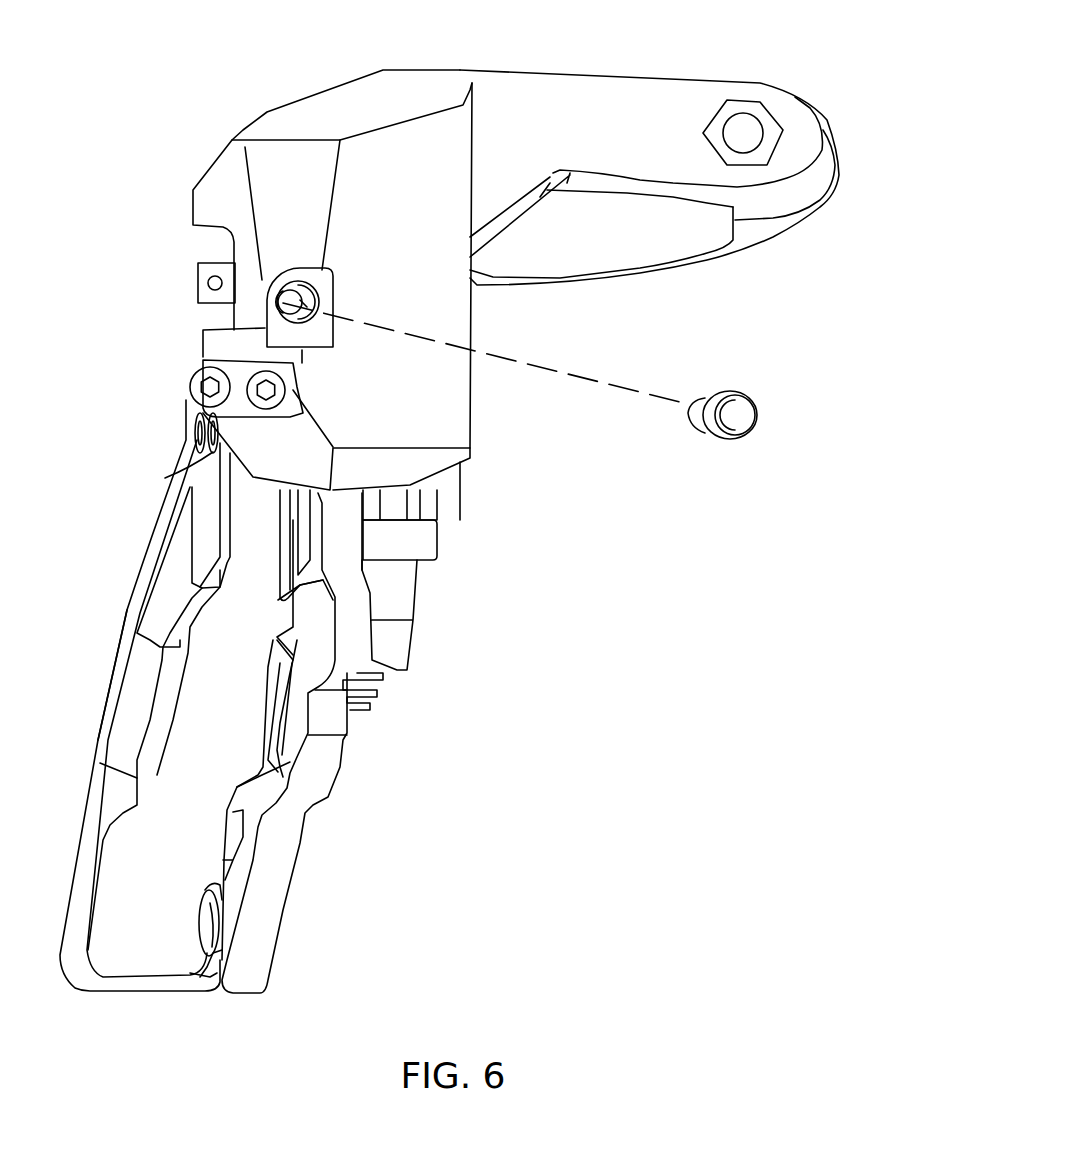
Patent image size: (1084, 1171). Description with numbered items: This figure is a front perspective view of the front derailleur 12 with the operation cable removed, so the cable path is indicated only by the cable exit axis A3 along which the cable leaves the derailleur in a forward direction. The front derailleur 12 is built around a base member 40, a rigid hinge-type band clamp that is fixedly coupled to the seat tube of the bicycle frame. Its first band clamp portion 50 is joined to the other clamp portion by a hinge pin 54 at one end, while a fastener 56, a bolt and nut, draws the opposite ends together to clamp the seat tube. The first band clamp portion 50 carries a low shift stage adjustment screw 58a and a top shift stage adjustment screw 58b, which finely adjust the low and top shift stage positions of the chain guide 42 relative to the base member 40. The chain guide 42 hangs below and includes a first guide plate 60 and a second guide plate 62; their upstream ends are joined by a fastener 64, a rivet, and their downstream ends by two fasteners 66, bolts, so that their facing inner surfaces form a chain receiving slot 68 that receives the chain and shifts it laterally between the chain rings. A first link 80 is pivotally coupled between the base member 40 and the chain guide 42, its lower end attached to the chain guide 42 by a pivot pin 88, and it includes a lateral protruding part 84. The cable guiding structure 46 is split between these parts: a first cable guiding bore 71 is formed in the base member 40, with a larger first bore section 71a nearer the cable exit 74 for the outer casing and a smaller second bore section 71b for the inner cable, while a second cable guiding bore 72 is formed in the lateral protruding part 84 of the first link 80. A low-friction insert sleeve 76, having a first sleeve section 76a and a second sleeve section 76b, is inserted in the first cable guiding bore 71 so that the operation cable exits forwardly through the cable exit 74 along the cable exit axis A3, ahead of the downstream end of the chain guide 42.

The front derailleur 12 is at (174, 92).
The base member 40 is at (412, 66).
The chain guide 42 is at (116, 647).
The cable guiding structure 46 is at (140, 253).
The first band clamp portion 50 is at (527, 108).
The hinge pin 54 is at (615, 243).
The fastener 56 is at (733, 108).
The low shift stage adjustment screw 58a is at (218, 360).
The top shift stage adjustment screw 58b is at (196, 380).
The first guide plate 60 is at (112, 708).
The second guide plate 62 is at (318, 763).
The fastener 64 is at (203, 923).
The fasteners 66 is at (215, 448).
The chain receiving slot 68 is at (198, 828).
The first cable guiding bore 71 is at (268, 315).
The first bore section 71a is at (308, 318).
The second bore section 71b is at (295, 285).
The second cable guiding bore 72 is at (197, 281).
The cable exit 74 is at (318, 288).
The insert sleeve 76 is at (708, 437).
The first sleeve section 76a is at (747, 437).
The second sleeve section 76b is at (700, 407).
The first link 80 is at (393, 587).
The lateral protruding part 84 is at (215, 262).
The pivot pin 88 is at (360, 712).
The cable exit axis A3 is at (570, 378).